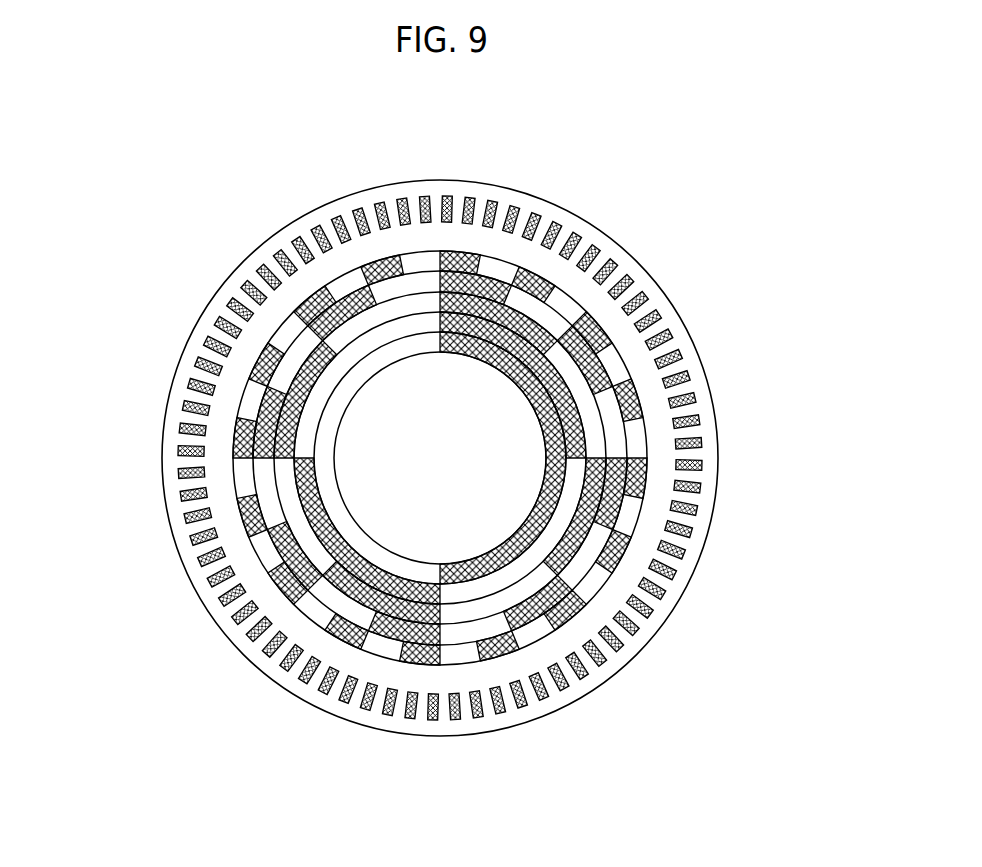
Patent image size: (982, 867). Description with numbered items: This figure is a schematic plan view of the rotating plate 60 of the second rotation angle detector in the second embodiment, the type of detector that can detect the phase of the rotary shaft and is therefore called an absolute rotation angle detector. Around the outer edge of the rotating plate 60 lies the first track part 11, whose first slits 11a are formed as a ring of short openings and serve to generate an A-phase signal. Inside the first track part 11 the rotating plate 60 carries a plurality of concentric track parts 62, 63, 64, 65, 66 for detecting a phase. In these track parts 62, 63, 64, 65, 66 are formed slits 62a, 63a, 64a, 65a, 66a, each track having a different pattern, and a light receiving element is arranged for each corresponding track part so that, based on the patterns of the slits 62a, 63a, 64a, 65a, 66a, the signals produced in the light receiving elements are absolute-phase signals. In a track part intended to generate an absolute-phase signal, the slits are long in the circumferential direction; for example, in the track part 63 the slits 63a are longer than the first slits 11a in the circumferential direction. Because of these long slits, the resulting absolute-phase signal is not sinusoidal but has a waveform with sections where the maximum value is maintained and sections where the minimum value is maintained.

The rotating plate 60 is at (562, 161).
The first track part 11 is at (488, 457).
The first slits 11a is at (577, 235).
The track part 62 is at (780, 322).
The slits 62a is at (600, 338).
The track part 63 is at (748, 583).
The slits 63a is at (612, 512).
The track part 64 is at (85, 407).
The slits 64a is at (255, 442).
The track part 65 is at (397, 587).
The slits 65a is at (427, 595).
The track part 66 is at (568, 488).
The slits 66a is at (573, 445).